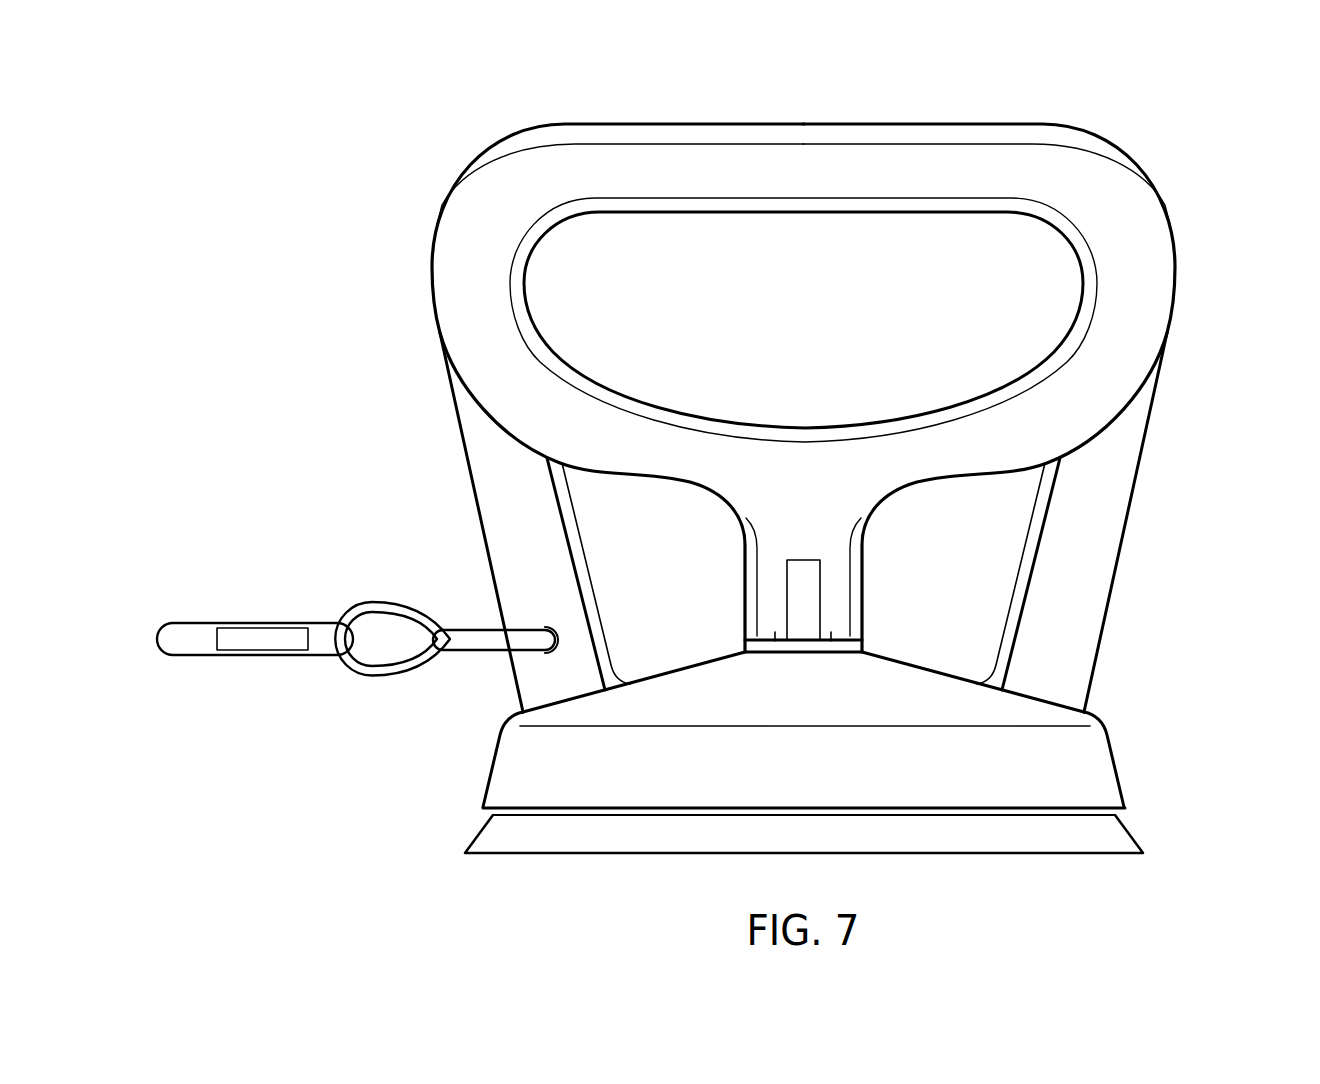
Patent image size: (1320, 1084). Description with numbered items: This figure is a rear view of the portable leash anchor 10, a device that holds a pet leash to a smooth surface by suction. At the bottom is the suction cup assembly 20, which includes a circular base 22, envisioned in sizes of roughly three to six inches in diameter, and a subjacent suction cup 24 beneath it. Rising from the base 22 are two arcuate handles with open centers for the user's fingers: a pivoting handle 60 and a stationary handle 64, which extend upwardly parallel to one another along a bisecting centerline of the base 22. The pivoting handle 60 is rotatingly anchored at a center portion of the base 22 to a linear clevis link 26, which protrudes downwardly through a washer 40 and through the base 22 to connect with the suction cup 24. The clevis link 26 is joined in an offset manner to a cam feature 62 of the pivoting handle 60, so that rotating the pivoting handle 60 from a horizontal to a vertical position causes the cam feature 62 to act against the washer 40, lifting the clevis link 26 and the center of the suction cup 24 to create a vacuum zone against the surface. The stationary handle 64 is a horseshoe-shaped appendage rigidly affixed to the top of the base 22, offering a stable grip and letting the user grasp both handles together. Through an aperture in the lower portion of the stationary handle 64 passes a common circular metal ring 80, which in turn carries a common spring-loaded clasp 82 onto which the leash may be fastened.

The portable leash anchor 10 is at (473, 110).
The suction cup assembly 20 is at (478, 795).
The circular base 22 is at (1092, 780).
The suction cup 24 is at (1110, 837).
The clevis link 26 is at (805, 587).
The washer 40 is at (743, 641).
The pivoting handle 60 is at (1037, 430).
The cam feature 62 is at (831, 642).
The stationary handle 64 is at (1120, 447).
The circular metal ring 80 is at (480, 638).
The spring-loaded clasp 82 is at (350, 617).